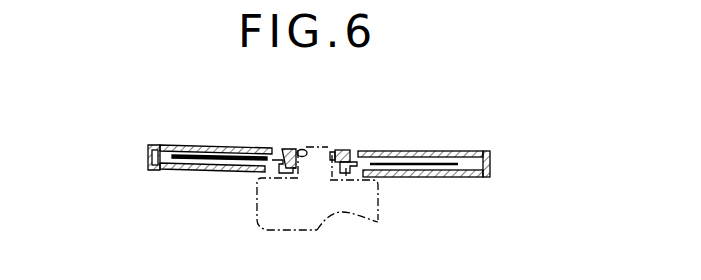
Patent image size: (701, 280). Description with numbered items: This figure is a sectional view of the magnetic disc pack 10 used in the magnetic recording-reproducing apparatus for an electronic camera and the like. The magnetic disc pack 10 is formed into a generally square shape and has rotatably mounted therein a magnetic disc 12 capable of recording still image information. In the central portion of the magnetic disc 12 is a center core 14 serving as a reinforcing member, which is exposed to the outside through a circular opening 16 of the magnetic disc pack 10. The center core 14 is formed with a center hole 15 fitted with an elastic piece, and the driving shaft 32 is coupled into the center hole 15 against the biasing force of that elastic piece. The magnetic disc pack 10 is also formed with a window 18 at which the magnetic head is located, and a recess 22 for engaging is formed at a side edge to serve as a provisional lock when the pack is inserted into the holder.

The magnetic disc pack 10 is at (195, 138).
The magnetic disc 12 is at (220, 143).
The center core 14 is at (287, 148).
The center hole 15 is at (300, 148).
The circular opening 16 is at (348, 150).
The window 18 is at (447, 178).
The recess 22 is at (147, 153).
The driving shaft 32 is at (320, 146).